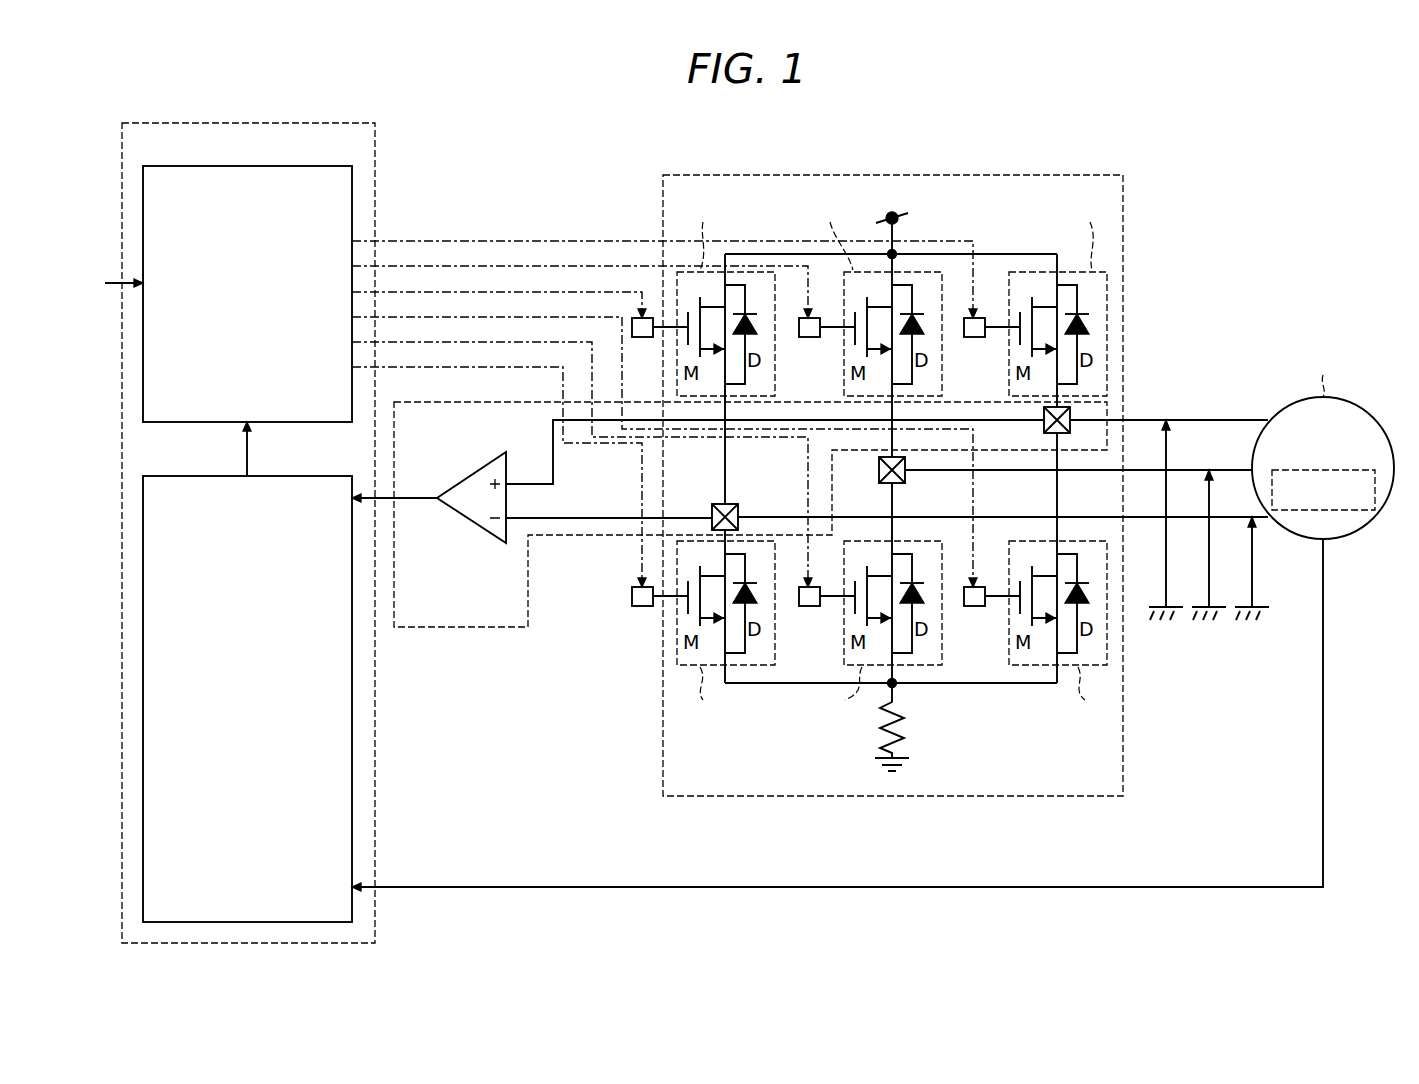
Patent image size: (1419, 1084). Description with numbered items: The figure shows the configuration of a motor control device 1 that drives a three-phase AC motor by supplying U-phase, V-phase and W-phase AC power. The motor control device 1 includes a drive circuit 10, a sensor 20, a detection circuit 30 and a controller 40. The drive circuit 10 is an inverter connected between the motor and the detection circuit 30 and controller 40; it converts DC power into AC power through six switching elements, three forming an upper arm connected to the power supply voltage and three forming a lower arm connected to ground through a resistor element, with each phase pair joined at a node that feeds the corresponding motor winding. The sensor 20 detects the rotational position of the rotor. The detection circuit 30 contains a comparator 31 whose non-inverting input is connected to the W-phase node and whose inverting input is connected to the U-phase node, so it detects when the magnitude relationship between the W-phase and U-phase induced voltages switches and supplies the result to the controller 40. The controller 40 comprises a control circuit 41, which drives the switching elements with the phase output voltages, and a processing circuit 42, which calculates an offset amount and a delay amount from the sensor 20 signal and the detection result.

The motor control device 1 is at (1229, 162).
The drive circuit 10 is at (1091, 175).
The sensor 20 is at (1337, 512).
The detection circuit 30 is at (461, 629).
The comparator 31 is at (469, 527).
The controller 40 is at (376, 149).
The control circuit 41 is at (352, 198).
The processing circuit 42 is at (304, 476).